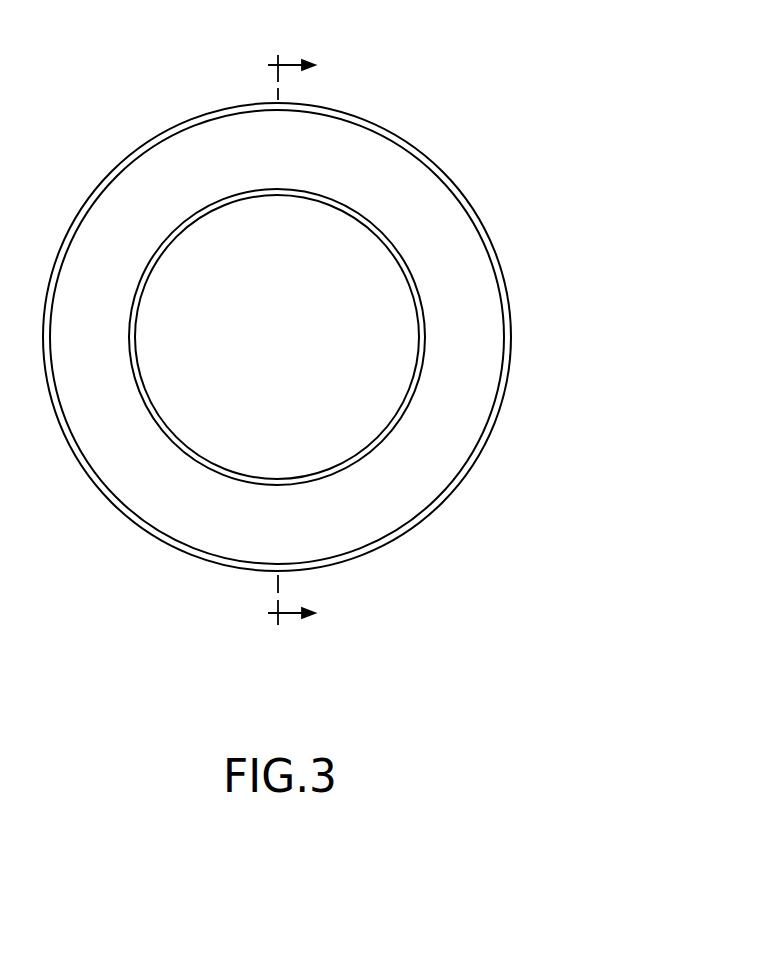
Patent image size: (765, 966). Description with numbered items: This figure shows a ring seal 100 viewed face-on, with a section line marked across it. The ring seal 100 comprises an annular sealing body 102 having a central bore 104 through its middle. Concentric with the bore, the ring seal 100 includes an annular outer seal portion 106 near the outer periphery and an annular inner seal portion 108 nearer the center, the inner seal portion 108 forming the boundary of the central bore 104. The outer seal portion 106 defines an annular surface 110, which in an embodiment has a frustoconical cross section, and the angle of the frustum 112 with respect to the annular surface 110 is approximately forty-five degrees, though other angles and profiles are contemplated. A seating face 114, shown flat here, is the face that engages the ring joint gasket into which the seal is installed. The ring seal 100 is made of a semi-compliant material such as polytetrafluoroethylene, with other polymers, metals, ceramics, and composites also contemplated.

The ring seal 100 is at (449, 97).
The annular sealing body 102 is at (485, 313).
The central bore 104 is at (296, 346).
The annular outer seal portion 106 is at (455, 488).
The annular inner seal portion 108 is at (398, 400).
The annular surface 110 is at (190, 228).
The frustum 112 is at (140, 372).
The seating face 114 is at (173, 128).